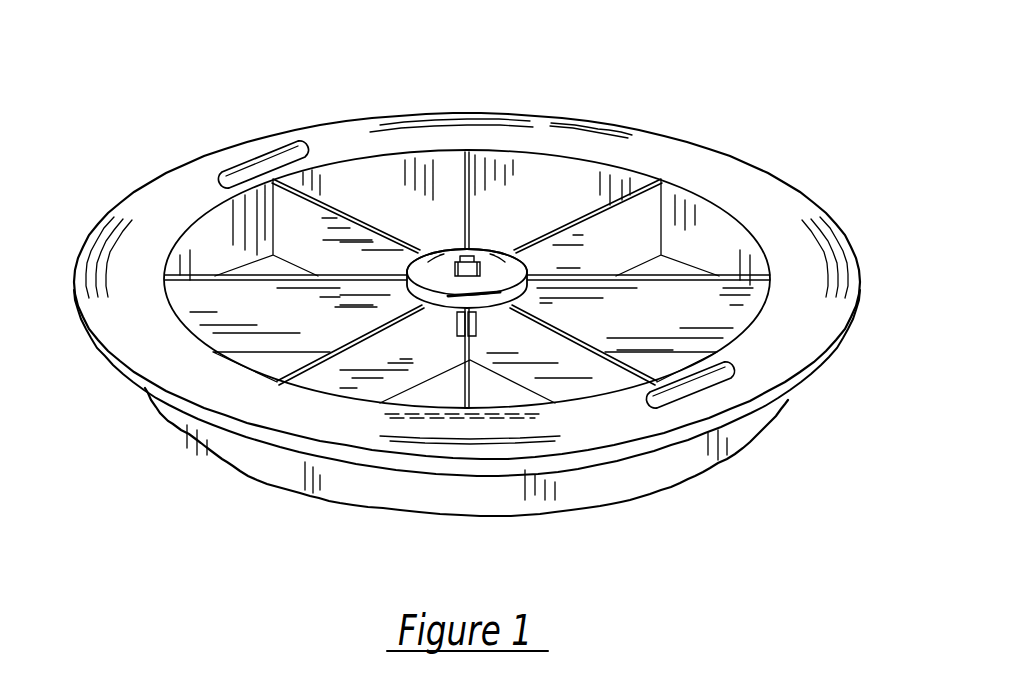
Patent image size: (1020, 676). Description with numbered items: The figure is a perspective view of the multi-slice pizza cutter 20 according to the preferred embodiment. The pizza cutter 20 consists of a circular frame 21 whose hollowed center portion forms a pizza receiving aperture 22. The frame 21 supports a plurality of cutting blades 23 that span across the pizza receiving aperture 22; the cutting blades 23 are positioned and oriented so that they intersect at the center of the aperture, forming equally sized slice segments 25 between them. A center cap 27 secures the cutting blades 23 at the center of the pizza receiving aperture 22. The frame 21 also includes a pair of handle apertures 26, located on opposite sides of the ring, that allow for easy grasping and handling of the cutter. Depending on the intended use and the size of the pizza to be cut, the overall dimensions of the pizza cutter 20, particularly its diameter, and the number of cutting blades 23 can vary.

The pizza cutter 20 is at (178, 98).
The circular frame 21 is at (170, 210).
The pizza receiving aperture 22 is at (442, 205).
The cutting blades 23 is at (572, 362).
The slice segments 25 is at (672, 190).
The handle apertures 26 is at (260, 163).
The center cap 27 is at (437, 263).